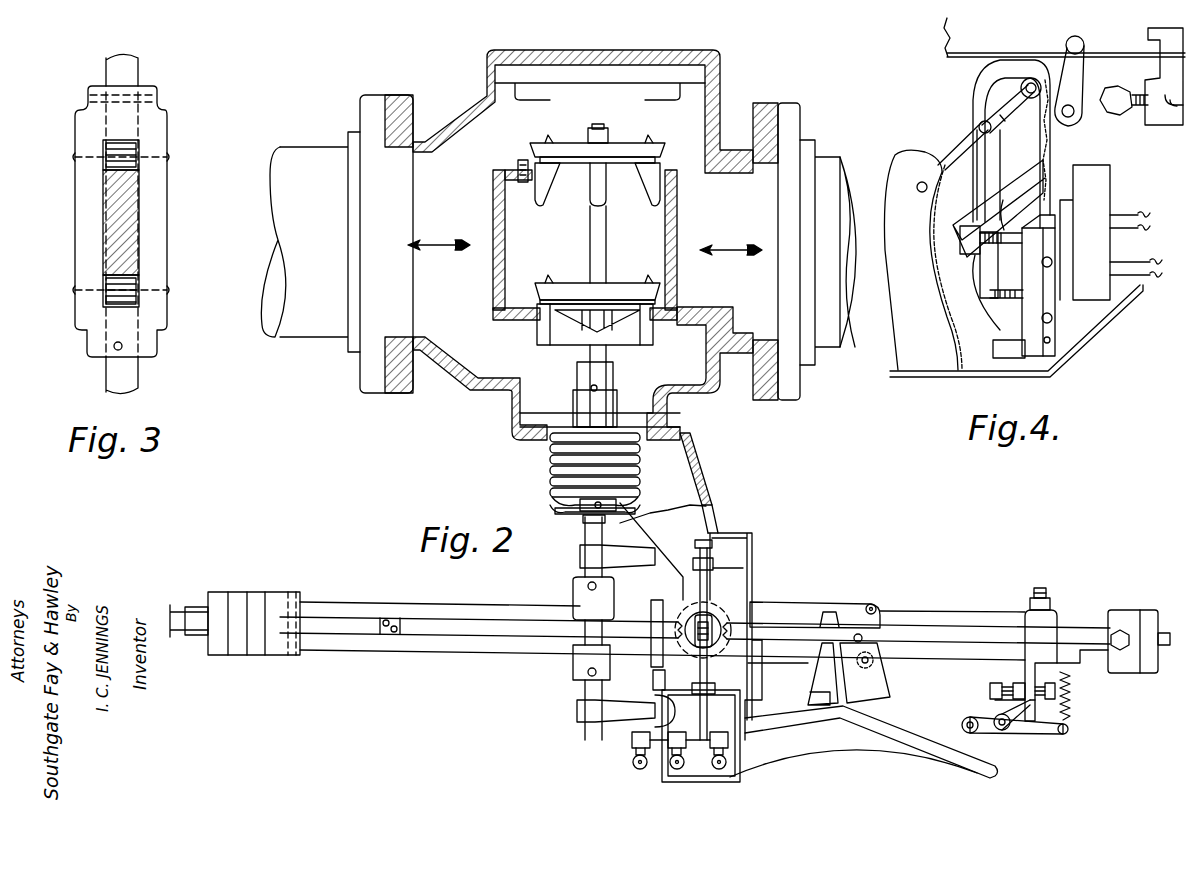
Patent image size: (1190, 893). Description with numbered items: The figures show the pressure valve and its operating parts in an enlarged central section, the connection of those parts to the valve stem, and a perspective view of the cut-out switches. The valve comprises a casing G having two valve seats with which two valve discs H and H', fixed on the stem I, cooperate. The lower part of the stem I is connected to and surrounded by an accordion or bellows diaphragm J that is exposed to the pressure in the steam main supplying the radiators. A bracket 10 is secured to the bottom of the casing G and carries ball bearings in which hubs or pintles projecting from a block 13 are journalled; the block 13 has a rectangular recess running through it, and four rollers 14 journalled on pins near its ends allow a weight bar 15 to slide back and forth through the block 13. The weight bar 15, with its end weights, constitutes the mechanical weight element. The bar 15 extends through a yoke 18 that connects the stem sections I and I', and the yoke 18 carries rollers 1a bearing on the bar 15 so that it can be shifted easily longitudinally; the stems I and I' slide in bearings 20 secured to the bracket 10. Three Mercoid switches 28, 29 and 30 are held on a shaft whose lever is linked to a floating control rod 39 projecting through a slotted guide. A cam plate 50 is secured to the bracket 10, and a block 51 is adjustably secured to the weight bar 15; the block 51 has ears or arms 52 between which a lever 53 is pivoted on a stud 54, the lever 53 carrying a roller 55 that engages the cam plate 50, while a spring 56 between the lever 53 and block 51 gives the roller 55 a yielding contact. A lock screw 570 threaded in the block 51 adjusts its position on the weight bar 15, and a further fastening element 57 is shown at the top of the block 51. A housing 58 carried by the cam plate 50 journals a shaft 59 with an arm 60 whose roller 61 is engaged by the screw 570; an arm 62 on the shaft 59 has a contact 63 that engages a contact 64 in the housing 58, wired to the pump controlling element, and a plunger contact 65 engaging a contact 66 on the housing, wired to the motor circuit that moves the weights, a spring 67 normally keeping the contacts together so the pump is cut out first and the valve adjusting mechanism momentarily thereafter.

In FIG. 2, the bracket 10 is at (690, 506).
In FIG. 2, the block 13 is at (815, 601).
In FIG. 2, the rollers 14 is at (873, 604).
In FIG. 2, the weight bar 15 is at (360, 602).
In FIG. 3, the yoke 18 is at (167, 196).
In FIG. 2, the yoke 18 is at (575, 662).
In FIG. 3, the rollers 1a is at (139, 281).
In FIG. 2, the bearings 20 is at (580, 551).
In FIG. 2, the Mercoid switch 28 is at (634, 768).
In FIG. 2, the Mercoid switch 29 is at (677, 770).
In FIG. 2, the Mercoid switch 30 is at (721, 770).
In FIG. 2, the floating control rod 39 is at (720, 590).
In FIG. 2, the cam plate 50 is at (876, 758).
In FIG. 2, the block 51 is at (1058, 612).
In FIG. 4, the block 51 is at (1145, 112).
In FIG. 2, the ears or arms 52 is at (1006, 735).
In FIG. 2, the lever 53 is at (1060, 735).
In FIG. 2, the stud 54 is at (970, 716).
In FIG. 2, the roller 55 is at (962, 723).
In FIG. 2, the spring 56 is at (1072, 700).
In FIG. 2, the adjusting nut 57 is at (1032, 590).
In FIG. 2, the housing 58 is at (888, 674).
In FIG. 4, the housing 58 is at (912, 362).
In FIG. 4, the shaft 59 is at (992, 110).
In FIG. 4, the arm 60 is at (1066, 82).
In FIG. 4, the roller 61 is at (1100, 90).
In FIG. 4, the arm 62 is at (985, 215).
In FIG. 4, the contact 63 is at (1047, 185).
In FIG. 4, the contact 64 is at (1075, 172).
In FIG. 4, the contact 65 is at (980, 177).
In FIG. 4, the contact 66 is at (1052, 163).
In FIG. 4, the spring 67 is at (1018, 292).
In FIG. 2, the lock screw 570 is at (998, 683).
In FIG. 4, the lock screw 570 is at (1162, 115).
In FIG. 2, the valve F is at (484, 419).
In FIG. 2, the casing G is at (465, 97).
In FIG. 2, the valve disc H is at (597, 156).
In FIG. 2, the valve disc H' is at (597, 292).
In FIG. 3, the valve stem I is at (139, 205).
In FIG. 2, the valve stem I is at (596, 391).
In FIG. 3, the valve stem section I' is at (142, 378).
In FIG. 2, the valve stem section I' is at (576, 658).
In FIG. 2, the accordion or bellows diaphragm J is at (638, 466).